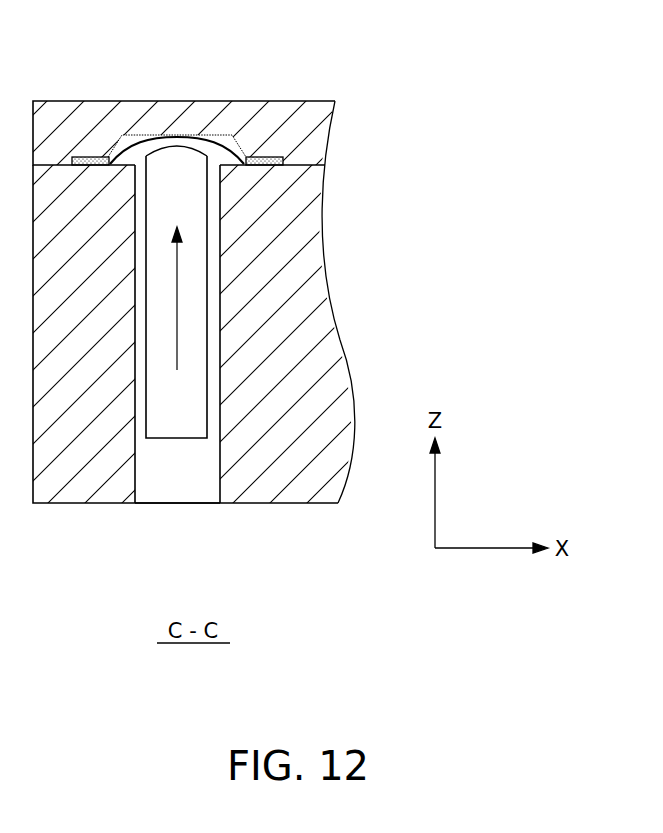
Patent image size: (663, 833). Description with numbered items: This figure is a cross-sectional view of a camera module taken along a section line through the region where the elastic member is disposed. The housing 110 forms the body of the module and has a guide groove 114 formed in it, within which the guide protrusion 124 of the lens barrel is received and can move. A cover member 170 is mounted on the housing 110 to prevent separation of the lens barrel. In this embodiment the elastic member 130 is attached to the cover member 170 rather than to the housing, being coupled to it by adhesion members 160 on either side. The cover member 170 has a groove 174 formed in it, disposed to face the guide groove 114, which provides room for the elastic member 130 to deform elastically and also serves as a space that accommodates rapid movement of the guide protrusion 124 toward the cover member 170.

The housing 110 is at (303, 275).
The guide groove 114 is at (185, 492).
The guide protrusion 124 is at (170, 422).
The elastic member 130 is at (163, 134).
The adhesion members 160 is at (92, 154).
The cover member 170 is at (303, 128).
The groove 174 is at (222, 150).